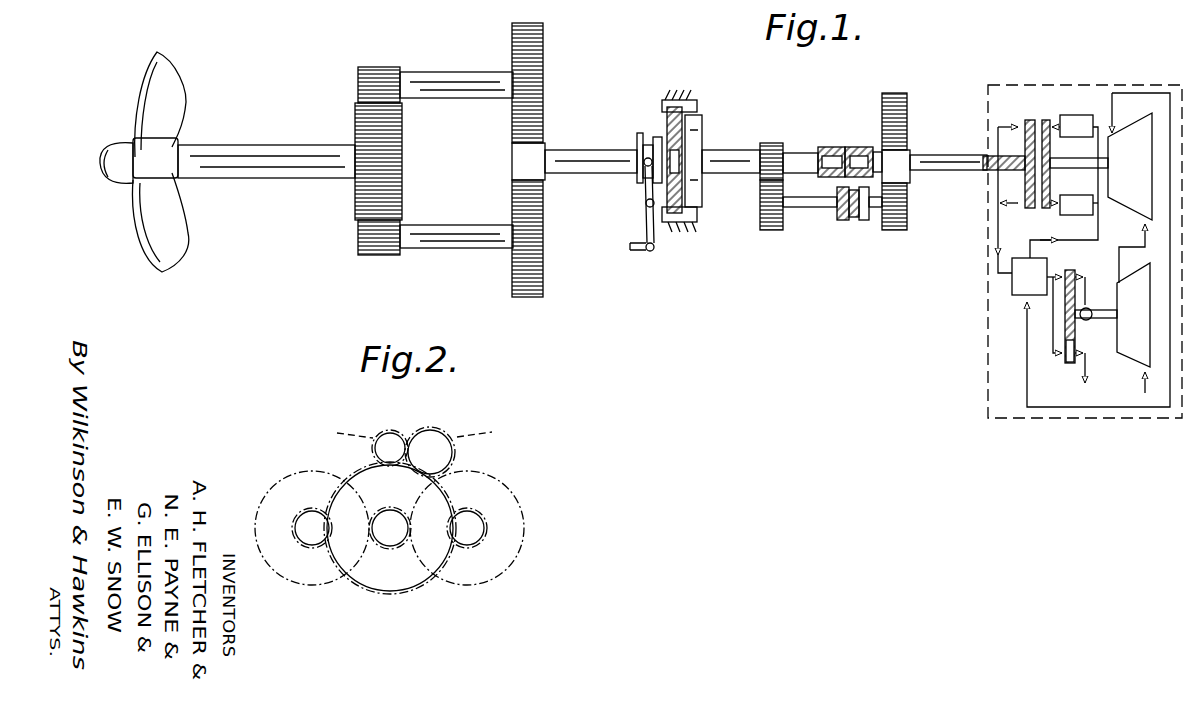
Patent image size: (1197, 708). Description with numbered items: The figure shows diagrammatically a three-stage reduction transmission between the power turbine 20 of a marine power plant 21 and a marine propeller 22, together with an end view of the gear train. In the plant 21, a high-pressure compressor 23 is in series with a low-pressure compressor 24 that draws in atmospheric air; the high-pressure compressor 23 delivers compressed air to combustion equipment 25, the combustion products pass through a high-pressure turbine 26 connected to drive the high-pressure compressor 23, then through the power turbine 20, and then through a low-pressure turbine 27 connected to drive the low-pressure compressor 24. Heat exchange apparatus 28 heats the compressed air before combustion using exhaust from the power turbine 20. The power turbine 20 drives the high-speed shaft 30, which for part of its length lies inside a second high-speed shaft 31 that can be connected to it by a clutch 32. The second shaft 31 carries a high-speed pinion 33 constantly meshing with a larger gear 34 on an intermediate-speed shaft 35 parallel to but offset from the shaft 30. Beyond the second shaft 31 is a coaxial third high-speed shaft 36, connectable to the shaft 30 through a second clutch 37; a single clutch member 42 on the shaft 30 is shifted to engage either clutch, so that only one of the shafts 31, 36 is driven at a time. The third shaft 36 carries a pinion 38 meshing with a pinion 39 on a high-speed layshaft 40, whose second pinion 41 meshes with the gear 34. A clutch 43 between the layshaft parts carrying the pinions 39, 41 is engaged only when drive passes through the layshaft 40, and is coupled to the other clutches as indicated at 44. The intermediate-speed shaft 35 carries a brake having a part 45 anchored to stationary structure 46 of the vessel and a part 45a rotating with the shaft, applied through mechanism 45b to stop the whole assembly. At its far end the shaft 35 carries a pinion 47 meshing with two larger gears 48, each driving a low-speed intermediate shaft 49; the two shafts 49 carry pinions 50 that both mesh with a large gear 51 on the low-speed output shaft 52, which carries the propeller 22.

In FIG. 1, the power turbine 20 is at (1028, 118).
In FIG. 1, the marine power plant 21 is at (986, 366).
In FIG. 1, the marine propeller 22 is at (158, 57).
In FIG. 1, the high-pressure compressor 23 is at (1140, 130).
In FIG. 1, the low-pressure compressor 24 is at (1132, 352).
In FIG. 1, the combustion equipment 25 is at (1083, 200).
In FIG. 1, the high-pressure turbine 26 is at (1046, 118).
In FIG. 1, the low-pressure turbine 27 is at (1068, 364).
In FIG. 1, the heat exchange apparatus 28 is at (1012, 282).
In FIG. 1, the high-speed shaft 30 is at (953, 170).
In FIG. 1, the second high-speed shaft 31 is at (870, 150).
In FIG. 1, the clutch 32 is at (847, 150).
In FIG. 1, the high-speed pinion 33 is at (909, 150).
In FIG. 2, the high-speed pinion 33 is at (338, 429).
In FIG. 1, the gear 34 is at (907, 100).
In FIG. 2, the gear 34 is at (353, 477).
In FIG. 1, the intermediate-speed shaft 35 is at (723, 150).
In FIG. 1, the third high-speed shaft 36 is at (792, 153).
In FIG. 1, the second clutch 37 is at (830, 192).
In FIG. 1, the high-speed pinion 38 is at (762, 173).
In FIG. 2, the high-speed pinion 38 is at (383, 435).
In FIG. 1, the pinion 39 is at (763, 230).
In FIG. 2, the pinion 39 is at (440, 432).
In FIG. 1, the high-speed layshaft 40 is at (795, 207).
In FIG. 1, the second pinion 41 is at (910, 217).
In FIG. 2, the second pinion 41 is at (490, 431).
In FIG. 1, the clutch member 42 is at (820, 147).
In FIG. 1, the clutch 43 is at (860, 222).
In FIG. 1, the coupling 44 is at (838, 222).
In FIG. 1, the brake part 45 is at (670, 123).
In FIG. 1, the brake part 45a is at (700, 117).
In FIG. 1, the brake mechanism 45b is at (645, 188).
In FIG. 1, the stationary structure 46 is at (683, 100).
In FIG. 1, the pinion 47 is at (546, 143).
In FIG. 2, the pinion 47 is at (387, 547).
In FIG. 1, the gears 48 is at (512, 123).
In FIG. 2, the gears 48 is at (295, 583).
In FIG. 1, the low-speed intermediate shafts 49 is at (452, 72).
In FIG. 1, the pinions 50 is at (375, 67).
In FIG. 2, the pinions 50 is at (300, 523).
In FIG. 1, the gear 51 is at (357, 117).
In FIG. 2, the gear 51 is at (395, 587).
In FIG. 1, the low-speed output shaft 52 is at (267, 182).